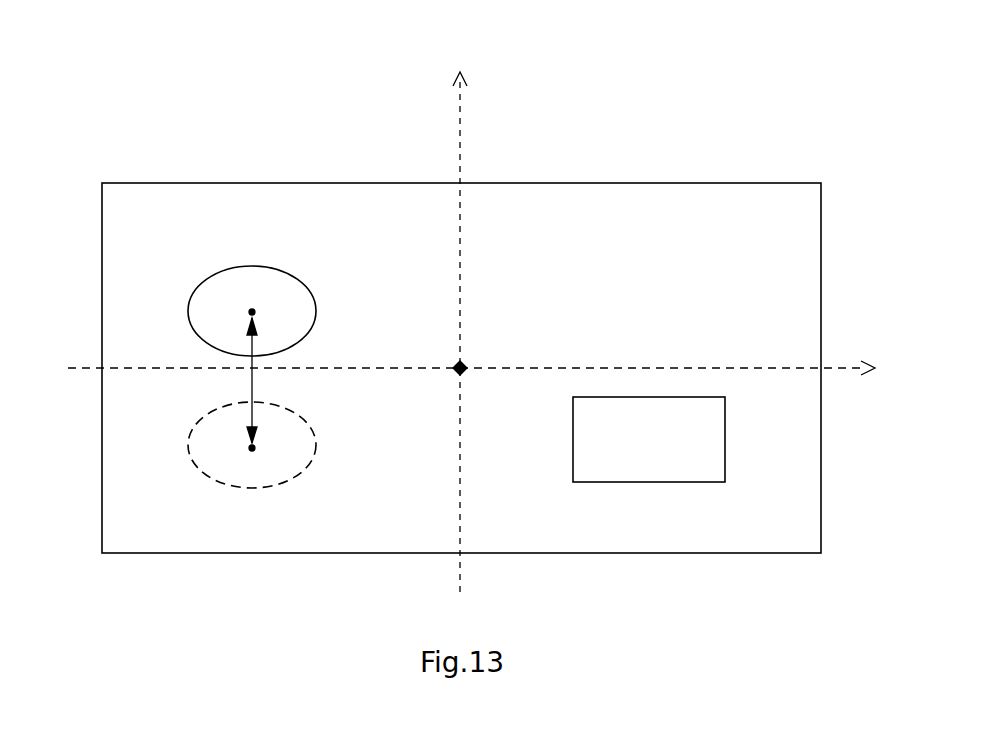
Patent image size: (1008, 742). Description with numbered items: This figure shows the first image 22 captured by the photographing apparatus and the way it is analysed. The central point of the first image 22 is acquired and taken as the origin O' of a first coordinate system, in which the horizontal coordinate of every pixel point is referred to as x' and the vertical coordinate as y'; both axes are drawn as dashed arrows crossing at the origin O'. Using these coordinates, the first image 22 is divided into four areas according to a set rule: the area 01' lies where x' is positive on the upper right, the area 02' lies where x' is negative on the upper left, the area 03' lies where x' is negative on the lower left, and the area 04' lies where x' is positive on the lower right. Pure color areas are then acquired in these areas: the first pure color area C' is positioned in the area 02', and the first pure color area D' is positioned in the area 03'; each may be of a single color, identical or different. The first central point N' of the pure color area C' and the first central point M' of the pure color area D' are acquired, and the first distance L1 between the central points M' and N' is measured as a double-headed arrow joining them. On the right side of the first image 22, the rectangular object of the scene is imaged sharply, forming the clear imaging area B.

The first image 22 is at (638, 183).
The area of first image 01' is at (794, 252).
The area of first image 02' is at (102, 306).
The area of first image 03' is at (102, 504).
The area of first image 04' is at (591, 570).
The origin of first coordinate system O' is at (531, 234).
The horizontal coordinate x' is at (471, 354).
The vertical coordinate y' is at (475, 332).
The central point of first pure color area C' N' is at (229, 202).
The central point of first pure color area D' M' is at (280, 534).
The first pure color area C' is at (294, 230).
The first pure color area D' is at (228, 512).
The first distance L1 is at (234, 380).
The clear imaging area of rectangular object in first image B is at (725, 428).